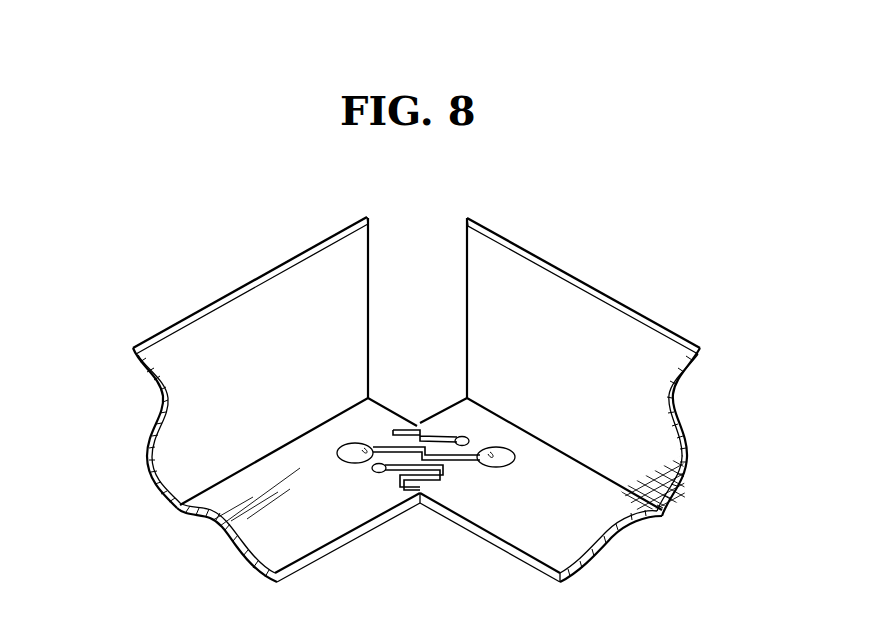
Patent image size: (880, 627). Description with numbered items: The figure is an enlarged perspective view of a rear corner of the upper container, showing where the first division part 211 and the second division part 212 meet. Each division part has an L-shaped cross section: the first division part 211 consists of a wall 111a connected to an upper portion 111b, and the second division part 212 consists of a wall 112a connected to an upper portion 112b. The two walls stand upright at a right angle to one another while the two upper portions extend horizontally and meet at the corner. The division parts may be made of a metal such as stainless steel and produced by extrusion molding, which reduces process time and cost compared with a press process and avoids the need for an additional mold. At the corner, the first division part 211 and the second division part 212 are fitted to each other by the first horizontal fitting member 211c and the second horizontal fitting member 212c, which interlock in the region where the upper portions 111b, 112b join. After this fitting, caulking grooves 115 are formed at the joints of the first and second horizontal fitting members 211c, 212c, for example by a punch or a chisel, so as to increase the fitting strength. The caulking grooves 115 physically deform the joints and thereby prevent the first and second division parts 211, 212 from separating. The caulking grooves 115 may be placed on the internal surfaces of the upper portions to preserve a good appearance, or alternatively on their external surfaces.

The first division part 211 is at (261, 397).
The second division part 212 is at (564, 382).
The wall 111a is at (281, 293).
The upper portion 111b is at (256, 548).
The wall 112a is at (628, 336).
The upper portion 112b is at (583, 540).
The first horizontal fitting member 211c is at (442, 440).
The second horizontal fitting member 212c is at (383, 447).
The caulking grooves 115 is at (345, 459).